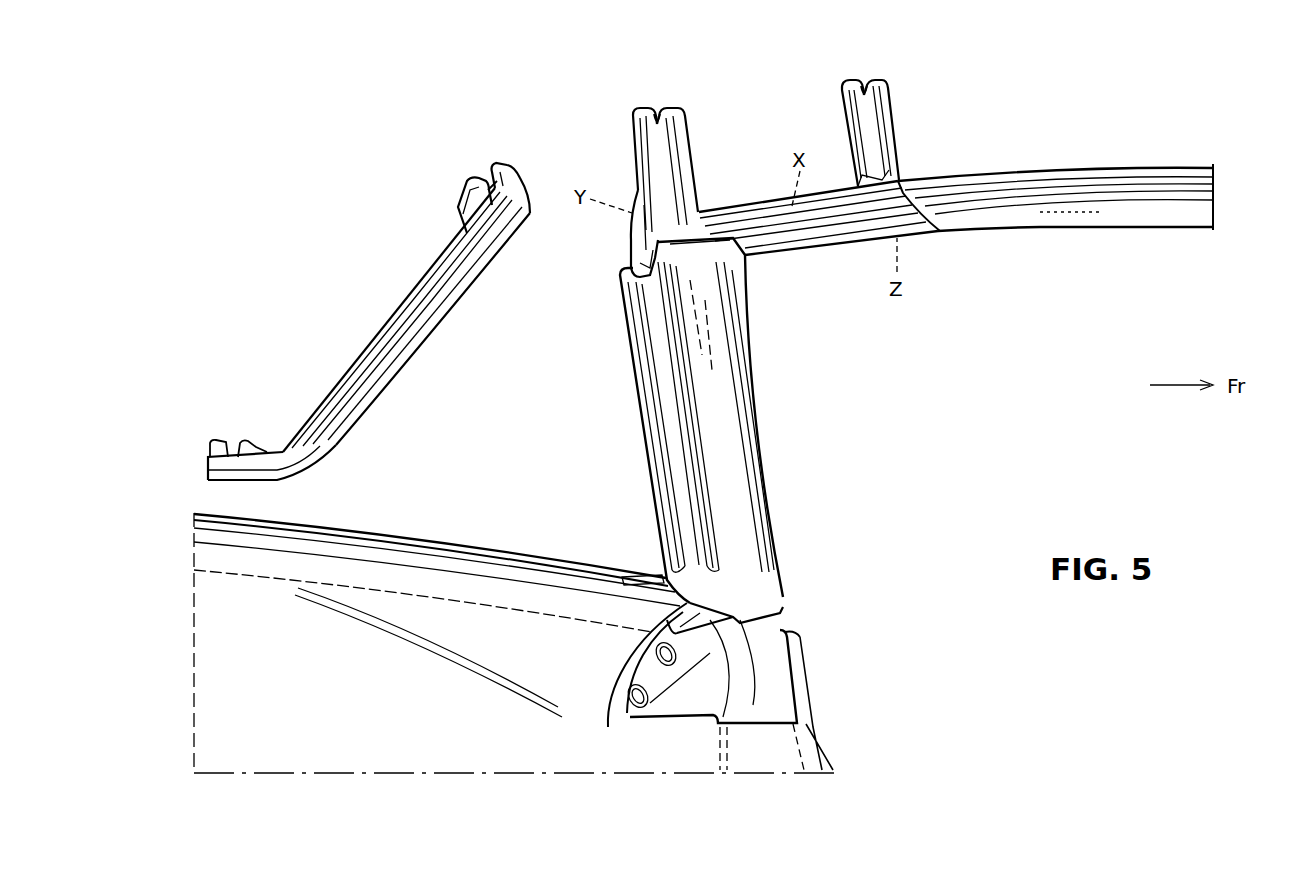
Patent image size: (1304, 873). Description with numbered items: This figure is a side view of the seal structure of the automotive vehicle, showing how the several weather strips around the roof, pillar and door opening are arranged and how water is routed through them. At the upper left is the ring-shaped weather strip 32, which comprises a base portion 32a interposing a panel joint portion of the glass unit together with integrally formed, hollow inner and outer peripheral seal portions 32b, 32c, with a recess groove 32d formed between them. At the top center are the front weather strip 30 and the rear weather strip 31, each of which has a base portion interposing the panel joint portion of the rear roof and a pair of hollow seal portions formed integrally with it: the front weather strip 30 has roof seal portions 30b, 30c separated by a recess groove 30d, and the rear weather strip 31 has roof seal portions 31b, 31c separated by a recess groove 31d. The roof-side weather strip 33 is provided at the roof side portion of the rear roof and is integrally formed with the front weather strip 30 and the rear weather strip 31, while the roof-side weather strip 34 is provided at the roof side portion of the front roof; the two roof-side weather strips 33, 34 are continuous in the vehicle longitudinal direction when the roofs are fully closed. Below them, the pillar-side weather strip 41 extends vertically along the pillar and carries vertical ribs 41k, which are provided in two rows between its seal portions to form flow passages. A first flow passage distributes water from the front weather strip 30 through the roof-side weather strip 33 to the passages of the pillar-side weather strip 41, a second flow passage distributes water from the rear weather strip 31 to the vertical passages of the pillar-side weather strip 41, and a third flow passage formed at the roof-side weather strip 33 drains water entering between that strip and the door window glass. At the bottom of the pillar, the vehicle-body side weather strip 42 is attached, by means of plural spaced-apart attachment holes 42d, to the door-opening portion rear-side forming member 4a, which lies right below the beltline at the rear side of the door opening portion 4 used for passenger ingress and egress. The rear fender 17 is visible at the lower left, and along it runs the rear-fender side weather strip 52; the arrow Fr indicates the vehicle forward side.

The door opening portion 4 is at (774, 731).
The door-opening portion rear-side forming member 4a is at (703, 762).
The rear fender 17 is at (377, 681).
The front weather strip 30 is at (866, 108).
The roof seal portion 30b is at (887, 87).
The roof seal portion 30c is at (853, 117).
The recess groove 30d is at (863, 88).
The rear weather strip 31 is at (668, 168).
The roof seal portion 31b is at (692, 163).
The roof seal portion 31c is at (632, 134).
The recess groove 31d is at (657, 114).
The ring-shaped weather strip 32 is at (369, 291).
The base portion 32a is at (443, 322).
The inner peripheral seal portion 32b is at (462, 185).
The outer peripheral seal portion 32c is at (500, 170).
The recess groove 32d is at (492, 186).
The roof-side weather strip 33 is at (822, 252).
The roof-side weather strip 34 is at (1063, 168).
The pillar-side weather strip 41 is at (697, 430).
The vertical ribs 41k is at (678, 422).
The vehicle-body side weather strip 42 is at (701, 676).
The attachment holes 42d is at (657, 654).
The rear-fender side weather strip 52 is at (398, 543).